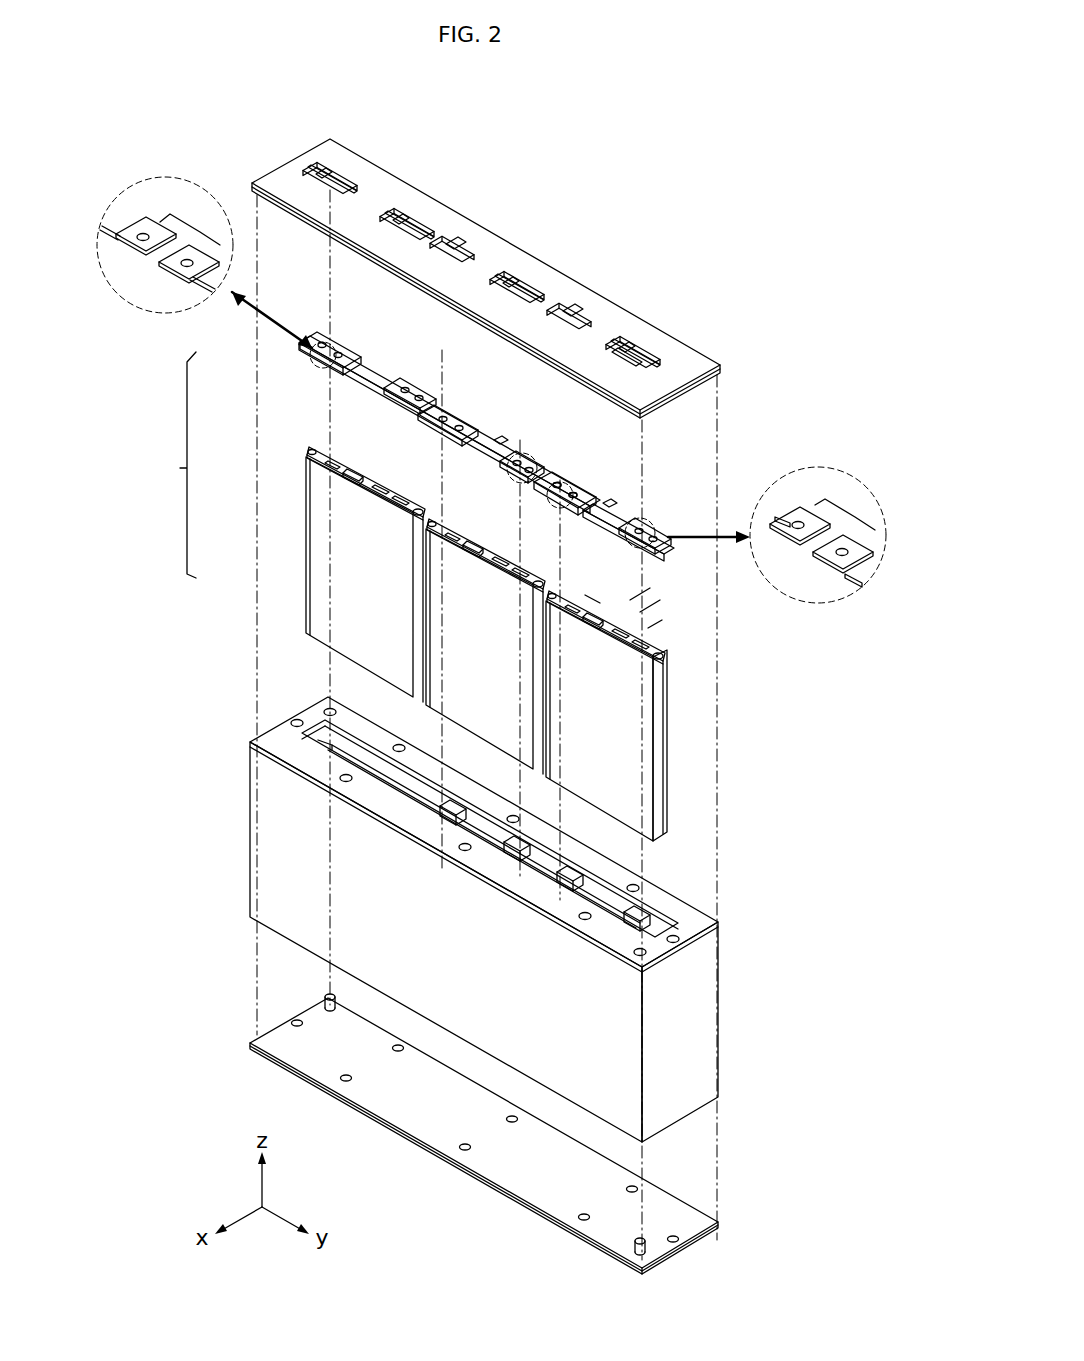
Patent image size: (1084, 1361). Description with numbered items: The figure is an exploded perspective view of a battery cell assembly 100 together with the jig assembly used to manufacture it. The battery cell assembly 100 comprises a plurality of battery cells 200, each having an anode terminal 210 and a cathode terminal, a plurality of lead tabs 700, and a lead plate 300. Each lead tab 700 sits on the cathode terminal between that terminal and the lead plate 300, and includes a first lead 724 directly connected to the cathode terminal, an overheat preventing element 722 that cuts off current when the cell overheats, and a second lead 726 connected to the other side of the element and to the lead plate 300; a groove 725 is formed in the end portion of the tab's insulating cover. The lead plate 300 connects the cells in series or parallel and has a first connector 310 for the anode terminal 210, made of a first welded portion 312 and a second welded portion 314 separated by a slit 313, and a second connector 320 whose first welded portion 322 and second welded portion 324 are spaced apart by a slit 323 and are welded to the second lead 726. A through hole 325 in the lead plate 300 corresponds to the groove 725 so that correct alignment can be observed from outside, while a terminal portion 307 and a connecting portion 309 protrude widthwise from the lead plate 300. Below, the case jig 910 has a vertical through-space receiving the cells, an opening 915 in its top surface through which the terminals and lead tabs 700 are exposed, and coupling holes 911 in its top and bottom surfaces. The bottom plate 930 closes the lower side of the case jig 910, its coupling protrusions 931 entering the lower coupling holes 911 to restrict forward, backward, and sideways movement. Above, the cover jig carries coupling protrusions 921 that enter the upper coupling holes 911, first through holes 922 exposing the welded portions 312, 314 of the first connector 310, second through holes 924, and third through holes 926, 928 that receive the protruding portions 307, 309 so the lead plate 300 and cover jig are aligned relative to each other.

The battery cell assembly 100 is at (163, 465).
The battery cell 200 is at (481, 629).
The anode terminal 210 is at (565, 608).
The lead plate 300 is at (517, 397).
The terminal portion 307 is at (503, 440).
The connecting portion 309 is at (418, 386).
The first connector 310 is at (330, 347).
The first welded portion 312 is at (558, 474).
The slit 313 is at (175, 238).
The second welded portion 314 is at (575, 484).
The second connector 320 is at (515, 480).
The first welded portion 322 is at (798, 524).
The slit 323 is at (830, 540).
The second welded portion 324 is at (845, 552).
The through hole 325 is at (478, 432).
The lead tab 700 is at (378, 460).
The overheat preventing element 722 is at (640, 620).
The first lead 724 is at (637, 603).
The groove 725 is at (590, 597).
The second lead 726 is at (650, 640).
The case jig 910 is at (515, 902).
The coupling hole 911 is at (326, 708).
The opening 915 is at (505, 843).
The coupling protrusion 921 is at (640, 413).
The first through hole 922 is at (400, 218).
The second through hole 924 is at (318, 177).
The third through hole 926 is at (336, 175).
The third through hole 928 is at (609, 343).
The bottom plate 930 is at (484, 1117).
The coupling protrusion 931 is at (328, 994).